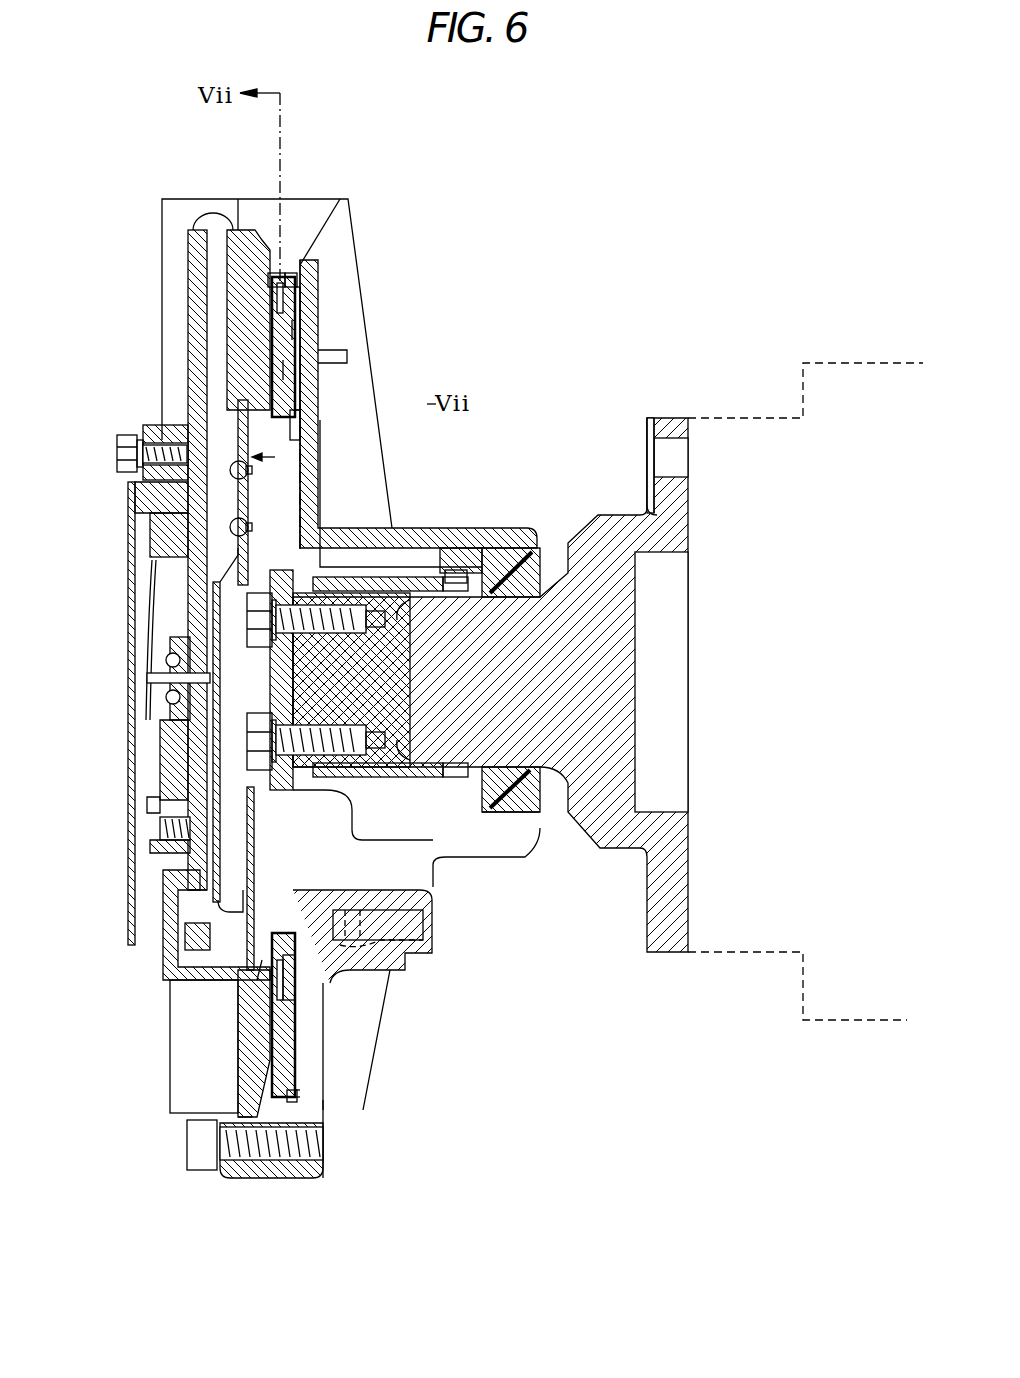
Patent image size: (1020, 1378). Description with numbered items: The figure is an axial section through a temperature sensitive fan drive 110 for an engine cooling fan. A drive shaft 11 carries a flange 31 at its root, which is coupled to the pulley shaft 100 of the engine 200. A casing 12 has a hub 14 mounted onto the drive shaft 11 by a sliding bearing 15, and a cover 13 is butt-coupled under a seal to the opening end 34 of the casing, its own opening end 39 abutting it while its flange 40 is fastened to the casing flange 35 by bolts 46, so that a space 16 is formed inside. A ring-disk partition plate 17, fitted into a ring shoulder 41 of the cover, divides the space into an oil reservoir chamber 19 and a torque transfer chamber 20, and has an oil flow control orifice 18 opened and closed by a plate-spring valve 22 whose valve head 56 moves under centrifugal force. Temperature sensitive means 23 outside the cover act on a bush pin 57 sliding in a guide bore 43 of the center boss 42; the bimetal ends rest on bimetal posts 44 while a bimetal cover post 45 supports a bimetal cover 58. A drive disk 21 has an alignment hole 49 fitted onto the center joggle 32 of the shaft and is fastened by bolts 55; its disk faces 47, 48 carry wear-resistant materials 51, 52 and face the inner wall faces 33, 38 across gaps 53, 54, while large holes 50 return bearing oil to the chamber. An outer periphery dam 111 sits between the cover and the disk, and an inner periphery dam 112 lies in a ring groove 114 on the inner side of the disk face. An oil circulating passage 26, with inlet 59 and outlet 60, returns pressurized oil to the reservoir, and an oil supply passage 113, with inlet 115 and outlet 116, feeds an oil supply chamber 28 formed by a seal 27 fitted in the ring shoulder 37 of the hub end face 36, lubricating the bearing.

The drive shaft 11 is at (480, 686).
The casing 12 is at (285, 418).
The cover 13 is at (190, 362).
The hub 14 is at (480, 810).
The bearing 15 is at (425, 605).
The space 16 is at (235, 690).
The partition plate 17 is at (400, 560).
The oil flow control orifice 18 is at (230, 962).
The oil reservoir chamber 19 is at (215, 497).
The torque transfer chamber 20 is at (340, 455).
The drive disk 21 is at (320, 1060).
The valve 22 is at (170, 912).
The temperature sensitive means 23 is at (170, 618).
The oil circulating passage 26 is at (245, 305).
The seal 27 is at (545, 565).
The oil supply chamber 28 is at (475, 590).
The flange 31 is at (668, 418).
The center joggle 32 is at (285, 690).
The inner wall face 33 is at (340, 975).
The opening end 34 is at (240, 210).
The flange 35 is at (300, 1180).
The end face 36 is at (545, 825).
The ring shoulder 37 is at (500, 800).
The inner wall face 38 is at (262, 980).
The opening end 39 is at (235, 1085).
The flange 40 is at (250, 1180).
The ring shoulder 41 is at (243, 420).
The center boss 42 is at (180, 637).
The guide bore 43 is at (175, 745).
The bimetal posts 44 is at (165, 578).
The bimetal cover post 45 is at (175, 450).
The bolts 46 is at (205, 1132).
The disk face 47 is at (255, 1010).
The disk face 48 is at (300, 1030).
The alignment hole 49 is at (285, 650).
The large holes 50 is at (305, 840).
The wear-resistant material 51 is at (270, 350).
The wear-resistant material 52 is at (290, 280).
The gap 53 is at (250, 1045).
The gap 54 is at (305, 1095).
The bolts 55 is at (405, 620).
The valve head 56 is at (212, 955).
The bush pin 57 is at (195, 685).
The bimetal cover 58 is at (162, 830).
The inlet 59 is at (205, 300).
The outlet 60 is at (300, 412).
The pulley shaft 100 is at (745, 428).
The temperature sensitive fan drive 110 is at (366, 129).
The outer periphery dam 111 is at (340, 205).
The inner periphery dam 112 is at (298, 335).
The oil supply passage 113 is at (455, 558).
The ring groove 114 is at (295, 320).
The inlet 115 is at (292, 360).
The outlet 116 is at (470, 578).
The engine 200 is at (845, 392).